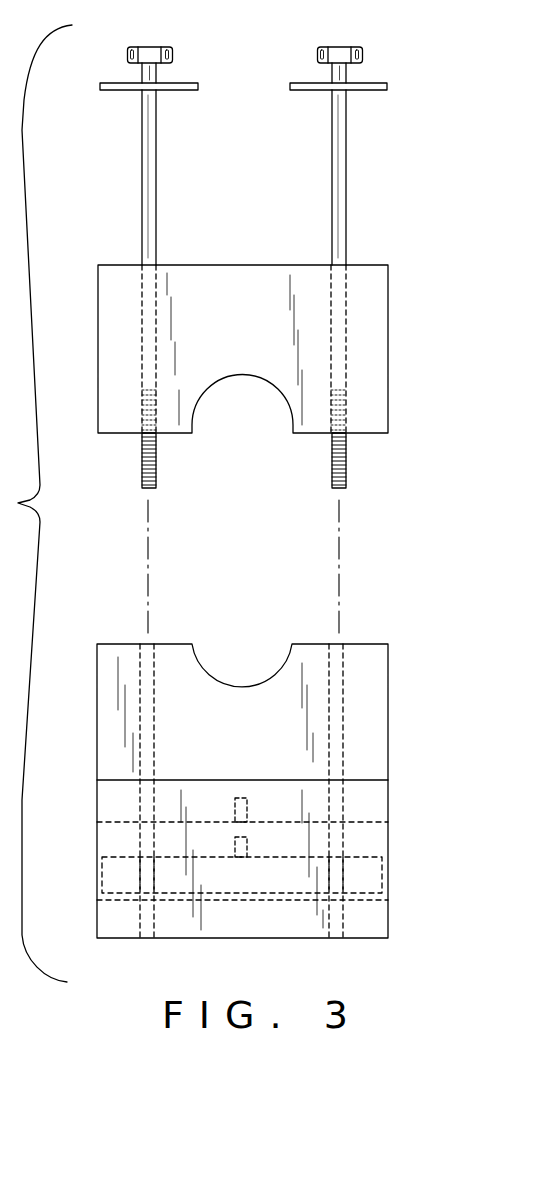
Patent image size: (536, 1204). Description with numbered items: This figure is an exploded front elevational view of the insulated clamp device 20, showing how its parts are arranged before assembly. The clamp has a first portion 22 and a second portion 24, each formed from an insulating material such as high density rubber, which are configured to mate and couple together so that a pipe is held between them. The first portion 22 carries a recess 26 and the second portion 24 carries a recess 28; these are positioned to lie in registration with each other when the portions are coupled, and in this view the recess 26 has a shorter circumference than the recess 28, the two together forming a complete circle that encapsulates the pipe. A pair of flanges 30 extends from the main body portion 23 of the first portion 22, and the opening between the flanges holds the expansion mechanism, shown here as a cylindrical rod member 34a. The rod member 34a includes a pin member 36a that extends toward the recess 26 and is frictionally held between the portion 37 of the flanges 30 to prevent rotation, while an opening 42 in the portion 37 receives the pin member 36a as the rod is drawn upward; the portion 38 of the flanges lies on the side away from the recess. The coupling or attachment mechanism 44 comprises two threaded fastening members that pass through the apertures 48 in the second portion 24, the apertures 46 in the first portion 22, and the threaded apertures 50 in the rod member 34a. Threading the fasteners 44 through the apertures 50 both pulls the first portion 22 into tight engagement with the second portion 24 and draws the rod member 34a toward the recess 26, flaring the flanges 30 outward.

The insulated clamp device 20 is at (214, 54).
The first portion 22 is at (256, 751).
The main body portion 23 is at (372, 728).
The second portion 24 is at (245, 316).
The recess 26 is at (233, 665).
The recess 28 is at (245, 413).
The flanges 30 is at (368, 842).
The cylindrical rod member 34a is at (368, 882).
The pin member 36a is at (242, 847).
The portion 37 is at (115, 803).
The portion 38 is at (119, 925).
The opening 42 is at (242, 805).
The coupling or attachment mechanism 44 is at (149, 192).
The apertures 46 is at (345, 678).
The apertures 48 is at (142, 312).
The apertures 50 is at (140, 877).